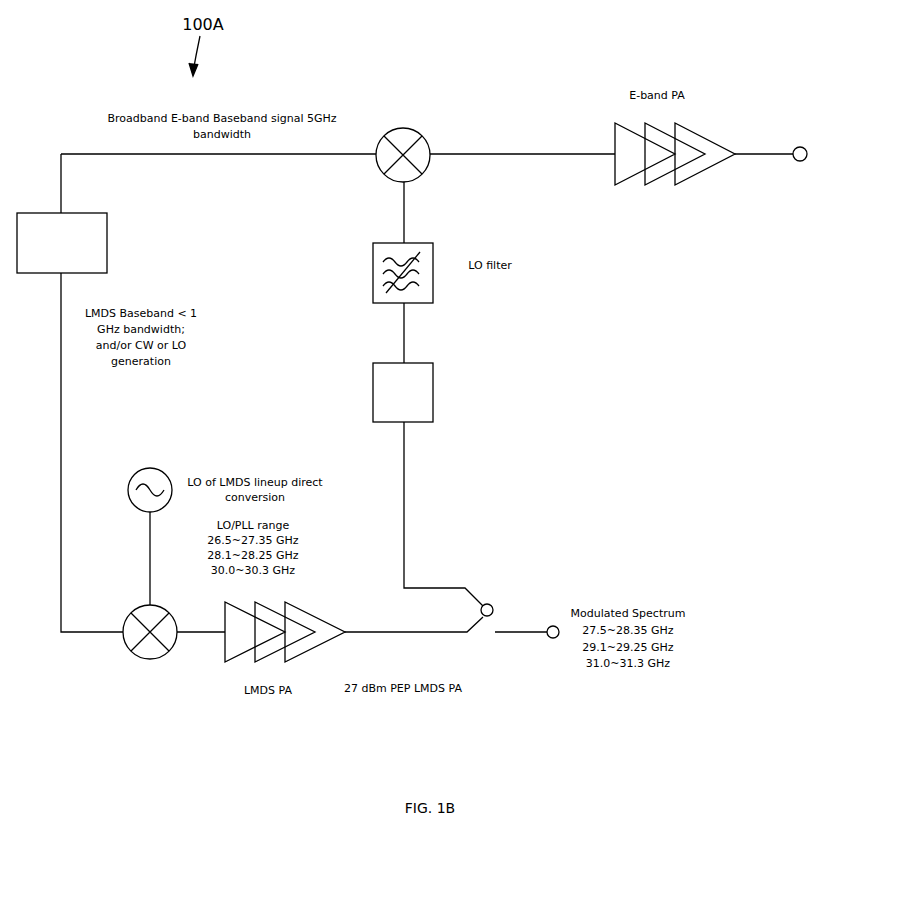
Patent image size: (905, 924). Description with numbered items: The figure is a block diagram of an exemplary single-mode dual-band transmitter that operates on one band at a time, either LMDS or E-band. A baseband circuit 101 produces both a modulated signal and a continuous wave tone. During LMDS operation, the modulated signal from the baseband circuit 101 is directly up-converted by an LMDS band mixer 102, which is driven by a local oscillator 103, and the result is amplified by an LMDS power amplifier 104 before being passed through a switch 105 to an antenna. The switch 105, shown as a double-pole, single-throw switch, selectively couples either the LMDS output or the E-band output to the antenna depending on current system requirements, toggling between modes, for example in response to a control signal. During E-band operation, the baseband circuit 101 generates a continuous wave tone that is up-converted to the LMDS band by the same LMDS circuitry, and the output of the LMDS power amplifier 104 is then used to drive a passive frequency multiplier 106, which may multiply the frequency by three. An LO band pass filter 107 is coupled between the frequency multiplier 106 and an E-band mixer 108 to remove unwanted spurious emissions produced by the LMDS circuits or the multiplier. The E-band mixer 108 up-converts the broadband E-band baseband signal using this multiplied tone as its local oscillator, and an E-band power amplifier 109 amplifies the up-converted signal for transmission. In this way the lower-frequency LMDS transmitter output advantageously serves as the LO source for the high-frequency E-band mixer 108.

The baseband circuit 101 is at (110, 242).
The LMDS band mixer 102 is at (138, 655).
The local oscillator 103 is at (128, 495).
The LMDS power amplifier 104 is at (225, 665).
The switch 105 is at (481, 603).
The passive frequency multiplier 106 is at (438, 398).
The LO band pass filter 107 is at (437, 295).
The E-band mixer 108 is at (435, 168).
The E-band power amplifier 109 is at (672, 180).